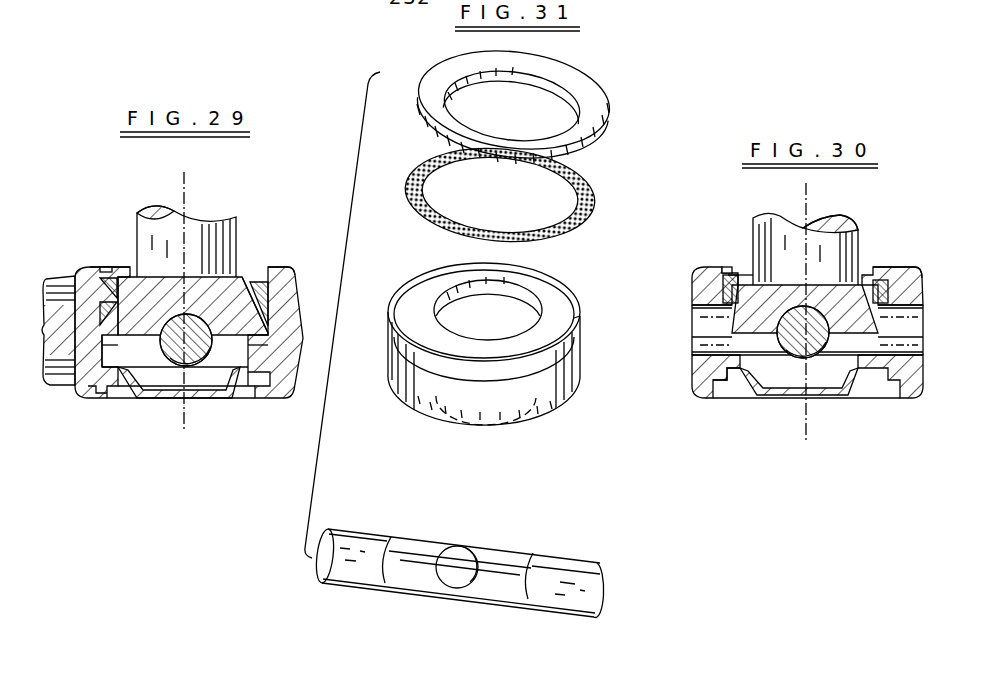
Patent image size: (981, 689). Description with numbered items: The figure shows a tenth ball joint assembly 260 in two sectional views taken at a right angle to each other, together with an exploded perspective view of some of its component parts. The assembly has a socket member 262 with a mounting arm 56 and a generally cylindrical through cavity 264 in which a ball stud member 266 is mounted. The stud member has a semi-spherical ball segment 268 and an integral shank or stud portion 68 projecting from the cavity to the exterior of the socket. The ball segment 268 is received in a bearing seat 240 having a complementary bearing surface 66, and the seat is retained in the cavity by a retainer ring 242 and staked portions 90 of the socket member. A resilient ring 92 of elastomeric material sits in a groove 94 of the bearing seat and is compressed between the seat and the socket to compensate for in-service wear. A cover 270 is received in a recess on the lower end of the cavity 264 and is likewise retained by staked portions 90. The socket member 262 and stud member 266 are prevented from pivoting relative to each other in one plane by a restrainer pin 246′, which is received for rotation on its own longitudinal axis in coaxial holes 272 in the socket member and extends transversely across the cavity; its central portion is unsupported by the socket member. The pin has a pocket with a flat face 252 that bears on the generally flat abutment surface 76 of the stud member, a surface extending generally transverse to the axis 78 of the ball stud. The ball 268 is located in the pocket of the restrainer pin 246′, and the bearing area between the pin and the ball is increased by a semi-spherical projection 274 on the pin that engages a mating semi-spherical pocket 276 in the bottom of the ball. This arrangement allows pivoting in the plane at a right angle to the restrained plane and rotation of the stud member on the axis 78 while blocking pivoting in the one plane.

In FIG. 29, the mounting arm 56 is at (62, 278).
In FIG. 31, the bearing surface 66 is at (506, 310).
In FIG. 29, the shank or stud portion 68 is at (149, 216).
In FIG. 30, the shank or stud portion 68 is at (755, 237).
In FIG. 29, the abutment surface 76 is at (250, 403).
In FIG. 30, the abutment surface 76 is at (851, 401).
In FIG. 29, the axis 78 is at (185, 196).
In FIG. 30, the axis 78 is at (806, 208).
In FIG. 29, the staked portions 90 is at (101, 268).
In FIG. 30, the staked portions 90 is at (718, 399).
In FIG. 31, the resilient ring 92 is at (590, 199).
In FIG. 31, the groove 94 is at (581, 325).
In FIG. 29, the bearing seat 240 is at (279, 290).
In FIG. 31, the bearing seat 240 is at (558, 418).
In FIG. 30, the bearing seat 240 is at (718, 298).
In FIG. 29, the retainer ring 242 is at (110, 267).
In FIG. 31, the retainer ring 242 is at (588, 94).
In FIG. 30, the retainer ring 242 is at (736, 278).
In FIG. 29, the restrainer pin 246′ is at (165, 382).
In FIG. 31, the restrainer pin 246′ is at (377, 523).
In FIG. 30, the restrainer pin 246′ is at (704, 334).
In FIG. 31, the flat face 252 is at (503, 588).
In FIG. 29, the joint assembly 260 is at (118, 178).
In FIG. 29, the socket member 262 is at (283, 266).
In FIG. 30, the socket member 262 is at (911, 266).
In FIG. 29, the through cavity 264 is at (108, 404).
In FIG. 29, the ball stud member 266 is at (214, 208).
In FIG. 30, the ball stud member 266 is at (837, 216).
In FIG. 29, the ball segment 268 is at (240, 292).
In FIG. 29, the cover 270 is at (184, 433).
In FIG. 30, the cover 270 is at (821, 405).
In FIG. 30, the coaxial holes 272 is at (704, 318).
In FIG. 29, the semi-spherical projection 274 is at (194, 405).
In FIG. 31, the semi-spherical projection 274 is at (463, 560).
In FIG. 30, the semi-spherical projection 274 is at (826, 332).
In FIG. 29, the semi-spherical pocket 276 is at (161, 347).
In FIG. 30, the semi-spherical pocket 276 is at (800, 318).